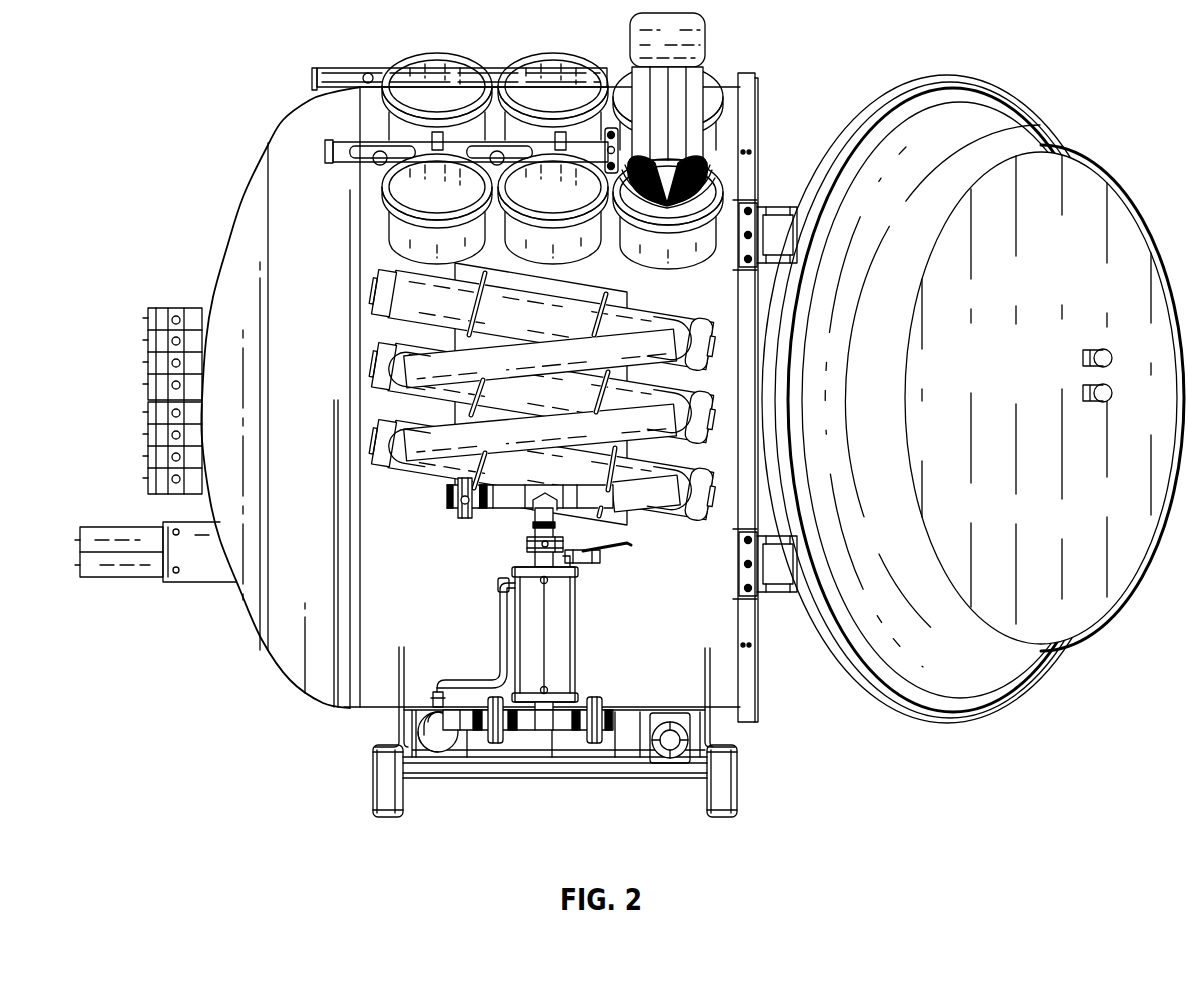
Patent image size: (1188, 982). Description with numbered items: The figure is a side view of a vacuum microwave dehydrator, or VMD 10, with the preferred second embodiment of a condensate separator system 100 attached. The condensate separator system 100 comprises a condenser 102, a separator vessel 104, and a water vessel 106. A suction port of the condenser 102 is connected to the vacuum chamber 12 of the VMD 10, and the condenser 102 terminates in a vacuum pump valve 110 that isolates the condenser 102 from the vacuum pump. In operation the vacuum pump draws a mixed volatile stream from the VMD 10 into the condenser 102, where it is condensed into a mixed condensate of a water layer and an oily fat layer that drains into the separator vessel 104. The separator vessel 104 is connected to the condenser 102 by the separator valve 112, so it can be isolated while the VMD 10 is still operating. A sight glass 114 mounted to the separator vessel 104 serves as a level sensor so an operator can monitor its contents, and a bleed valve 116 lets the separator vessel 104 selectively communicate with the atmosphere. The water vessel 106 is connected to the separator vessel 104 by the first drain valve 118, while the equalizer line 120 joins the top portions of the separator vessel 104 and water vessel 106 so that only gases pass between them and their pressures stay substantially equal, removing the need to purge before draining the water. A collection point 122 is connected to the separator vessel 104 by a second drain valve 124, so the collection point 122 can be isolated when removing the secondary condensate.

The VMD 10 is at (140, 62).
The vacuum chamber 12 is at (284, 119).
The condensate separator system 100 is at (300, 716).
The condenser 102 is at (379, 314).
The separator vessel 104 is at (577, 653).
The water vessel 106 is at (438, 752).
The vacuum pump valve 110 is at (463, 518).
The separator valve 112 is at (527, 545).
The sight glass 114 is at (548, 598).
The bleed valve 116 is at (597, 562).
The first drain valve 118 is at (498, 743).
The equalizer line 120 is at (455, 677).
The collection point 122 is at (613, 720).
The second drain valve 124 is at (593, 743).